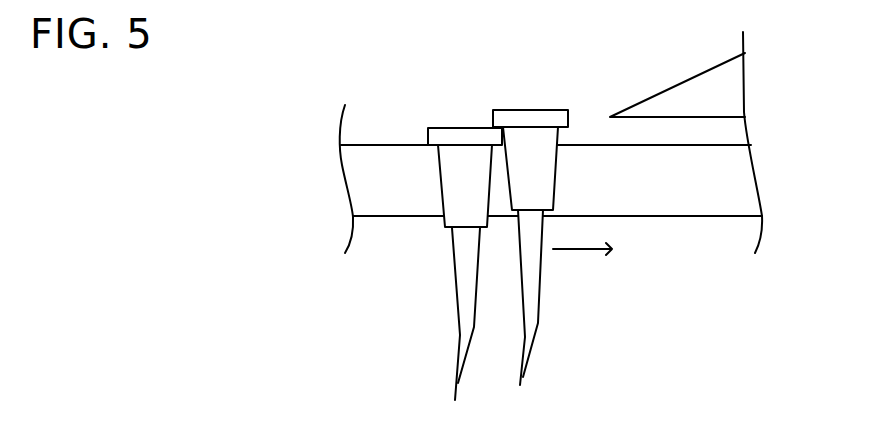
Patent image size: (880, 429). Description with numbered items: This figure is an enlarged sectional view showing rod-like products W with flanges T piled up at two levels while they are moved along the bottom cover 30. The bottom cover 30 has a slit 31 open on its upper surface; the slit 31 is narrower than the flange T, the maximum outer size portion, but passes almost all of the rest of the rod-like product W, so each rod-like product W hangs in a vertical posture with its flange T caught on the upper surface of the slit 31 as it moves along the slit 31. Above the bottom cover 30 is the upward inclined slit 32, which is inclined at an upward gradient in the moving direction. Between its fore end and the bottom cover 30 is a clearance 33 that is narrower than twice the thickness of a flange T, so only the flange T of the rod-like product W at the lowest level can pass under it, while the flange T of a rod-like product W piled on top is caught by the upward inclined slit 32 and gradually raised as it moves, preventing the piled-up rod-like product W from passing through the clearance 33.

The bottom cover 30 is at (358, 156).
The slit 31 is at (419, 131).
The upward inclined slit 32 is at (690, 70).
The clearance 33 is at (694, 155).
The flange T is at (452, 130).
The rod-like product W is at (462, 260).